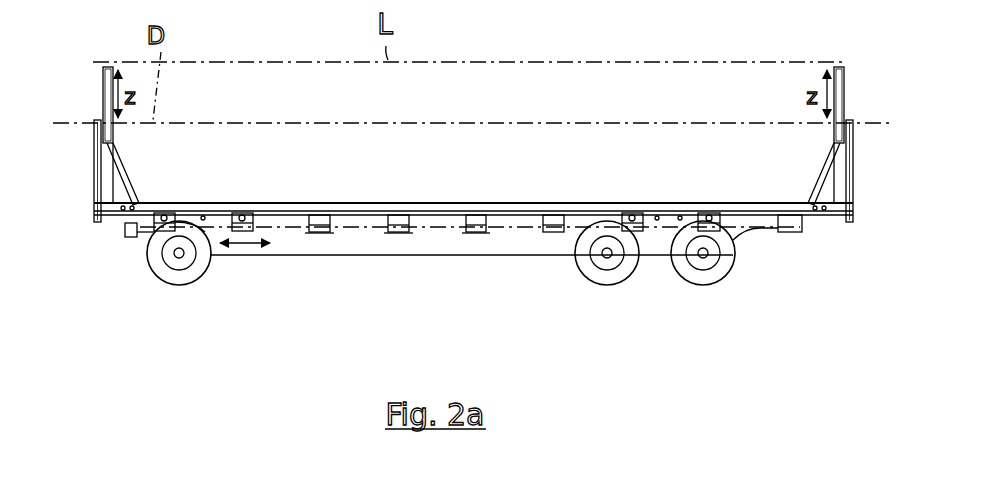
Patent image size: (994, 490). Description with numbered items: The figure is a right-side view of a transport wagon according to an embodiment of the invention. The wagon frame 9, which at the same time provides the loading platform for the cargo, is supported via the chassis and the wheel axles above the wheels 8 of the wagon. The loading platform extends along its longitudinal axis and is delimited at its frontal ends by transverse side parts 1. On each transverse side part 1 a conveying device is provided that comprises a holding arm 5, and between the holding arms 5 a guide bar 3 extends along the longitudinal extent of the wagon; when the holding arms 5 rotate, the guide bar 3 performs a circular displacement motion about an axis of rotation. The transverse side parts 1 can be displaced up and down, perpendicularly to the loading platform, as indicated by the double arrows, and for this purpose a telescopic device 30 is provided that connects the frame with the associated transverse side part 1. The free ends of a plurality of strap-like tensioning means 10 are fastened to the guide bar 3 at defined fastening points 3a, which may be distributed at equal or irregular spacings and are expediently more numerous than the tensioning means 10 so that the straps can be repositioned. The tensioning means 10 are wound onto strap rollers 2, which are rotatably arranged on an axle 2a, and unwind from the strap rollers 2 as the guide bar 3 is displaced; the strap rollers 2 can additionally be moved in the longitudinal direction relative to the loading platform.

The transverse side part 1 is at (103, 100).
The strap roller 2 is at (320, 233).
The axle 2a is at (360, 235).
The guide bar 3 is at (120, 240).
The fastening points 3a is at (164, 215).
The holding arm 5 is at (95, 175).
The wheel 8 is at (180, 288).
The wagon frame 9 is at (590, 205).
The strap-like tensioning means 10 is at (316, 213).
The telescopic device 30 is at (860, 68).